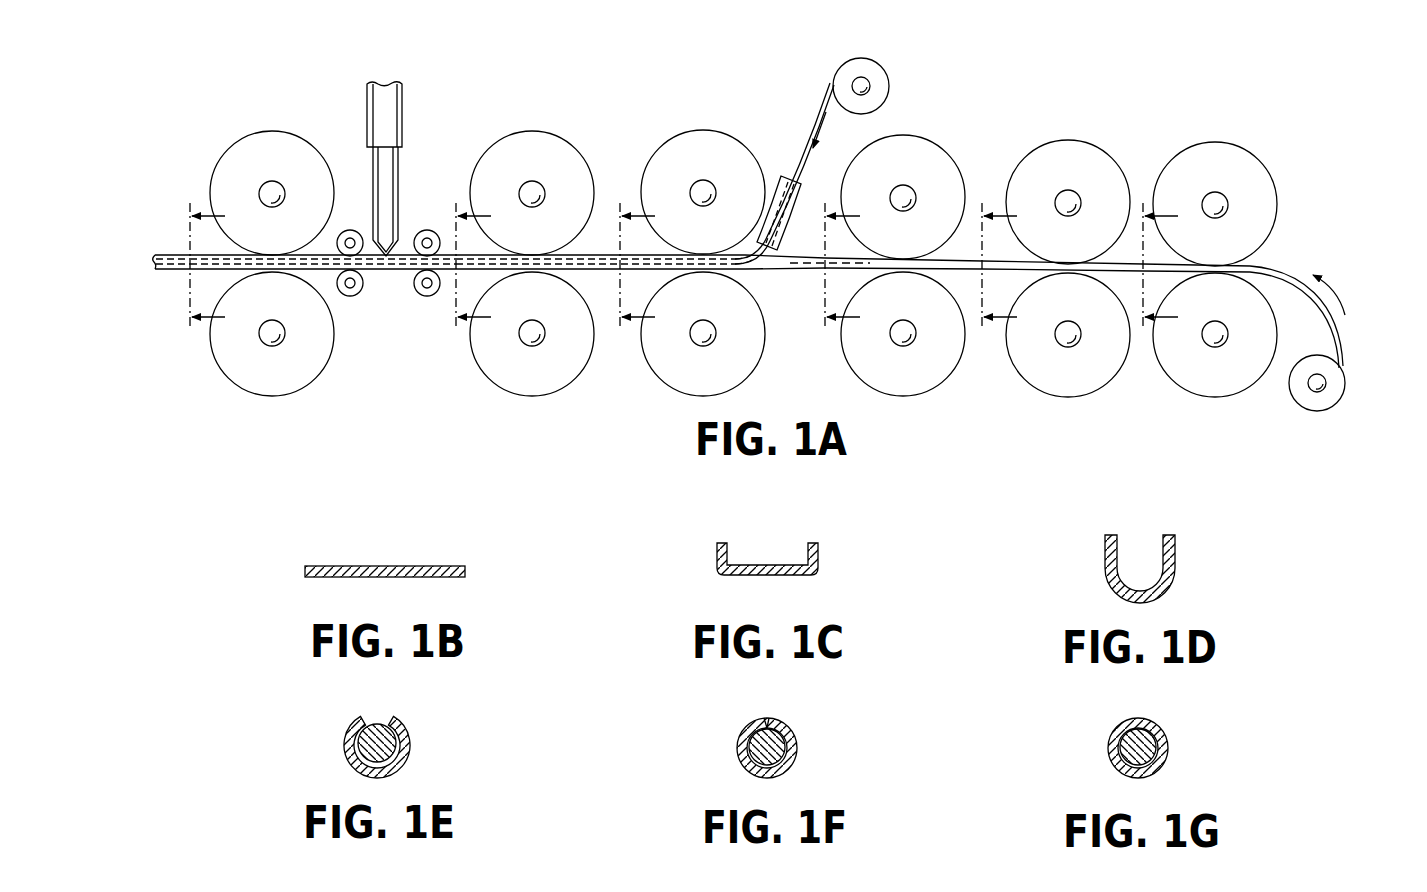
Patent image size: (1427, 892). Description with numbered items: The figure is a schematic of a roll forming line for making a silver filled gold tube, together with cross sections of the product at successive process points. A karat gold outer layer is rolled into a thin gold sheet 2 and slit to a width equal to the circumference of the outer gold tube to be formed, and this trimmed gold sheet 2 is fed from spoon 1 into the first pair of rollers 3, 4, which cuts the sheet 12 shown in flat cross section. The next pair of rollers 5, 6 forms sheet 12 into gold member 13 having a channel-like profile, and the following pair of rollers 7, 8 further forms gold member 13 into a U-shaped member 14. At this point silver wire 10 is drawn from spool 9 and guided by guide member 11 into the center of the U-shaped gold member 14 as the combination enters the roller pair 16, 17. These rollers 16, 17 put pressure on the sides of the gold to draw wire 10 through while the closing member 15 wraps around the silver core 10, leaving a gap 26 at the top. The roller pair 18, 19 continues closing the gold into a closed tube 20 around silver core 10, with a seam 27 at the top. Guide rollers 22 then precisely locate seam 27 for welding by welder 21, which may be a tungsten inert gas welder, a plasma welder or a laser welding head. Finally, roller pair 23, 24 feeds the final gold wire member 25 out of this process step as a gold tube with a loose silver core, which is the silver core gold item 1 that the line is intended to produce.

In FIG. 1A, the spool 1 is at (1325, 400).
In FIG. 1A, the gold sheet 2 is at (1343, 335).
In FIG. 1A, the first roller 3 is at (1273, 172).
In FIG. 1A, the first roller 4 is at (1253, 388).
In FIG. 1A, the second roller 5 is at (1103, 150).
In FIG. 1A, the second roller 6 is at (1095, 392).
In FIG. 1A, the third roller 7 is at (940, 160).
In FIG. 1A, the third roller 8 is at (933, 373).
In FIG. 1A, the spool 9 is at (889, 86).
In FIG. 1A, the silver wire 10 is at (815, 107).
In FIG. 1E, the silver wire 10 is at (395, 760).
In FIG. 1F, the silver wire 10 is at (778, 763).
In FIG. 1G, the silver wire 10 is at (1158, 763).
In FIG. 1A, the guide member 11 is at (777, 183).
In FIG. 1A, the sheet 12 is at (1173, 268).
In FIG. 1B, the sheet 12 is at (318, 565).
In FIG. 1A, the gold member 13 is at (1015, 265).
In FIG. 1C, the gold member 13 is at (818, 560).
In FIG. 1A, the U-shaped member 14 is at (867, 260).
In FIG. 1D, the U-shaped member 14 is at (1175, 560).
In FIG. 1A, the closing member 15 is at (583, 253).
In FIG. 1E, the closing member 15 is at (422, 748).
In FIG. 1A, the roller 16 is at (698, 137).
In FIG. 1A, the roller 17 is at (737, 368).
In FIG. 1A, the roller 18 is at (558, 146).
In FIG. 1A, the roller 19 is at (550, 382).
In FIG. 1A, the closed tube 20 is at (473, 273).
In FIG. 1F, the closed tube 20 is at (807, 745).
In FIG. 1A, the welder 21 is at (385, 182).
In FIG. 1A, the guide rollers 22 is at (425, 231).
In FIG. 1A, the roller 23 is at (303, 150).
In FIG. 1A, the roller 24 is at (305, 370).
In FIG. 1A, the final gold wire member 25 is at (168, 270).
In FIG. 1G, the final gold wire member 25 is at (1177, 738).
In FIG. 1E, the gap in tube 26 is at (378, 718).
In FIG. 1F, the seam 27 is at (767, 727).